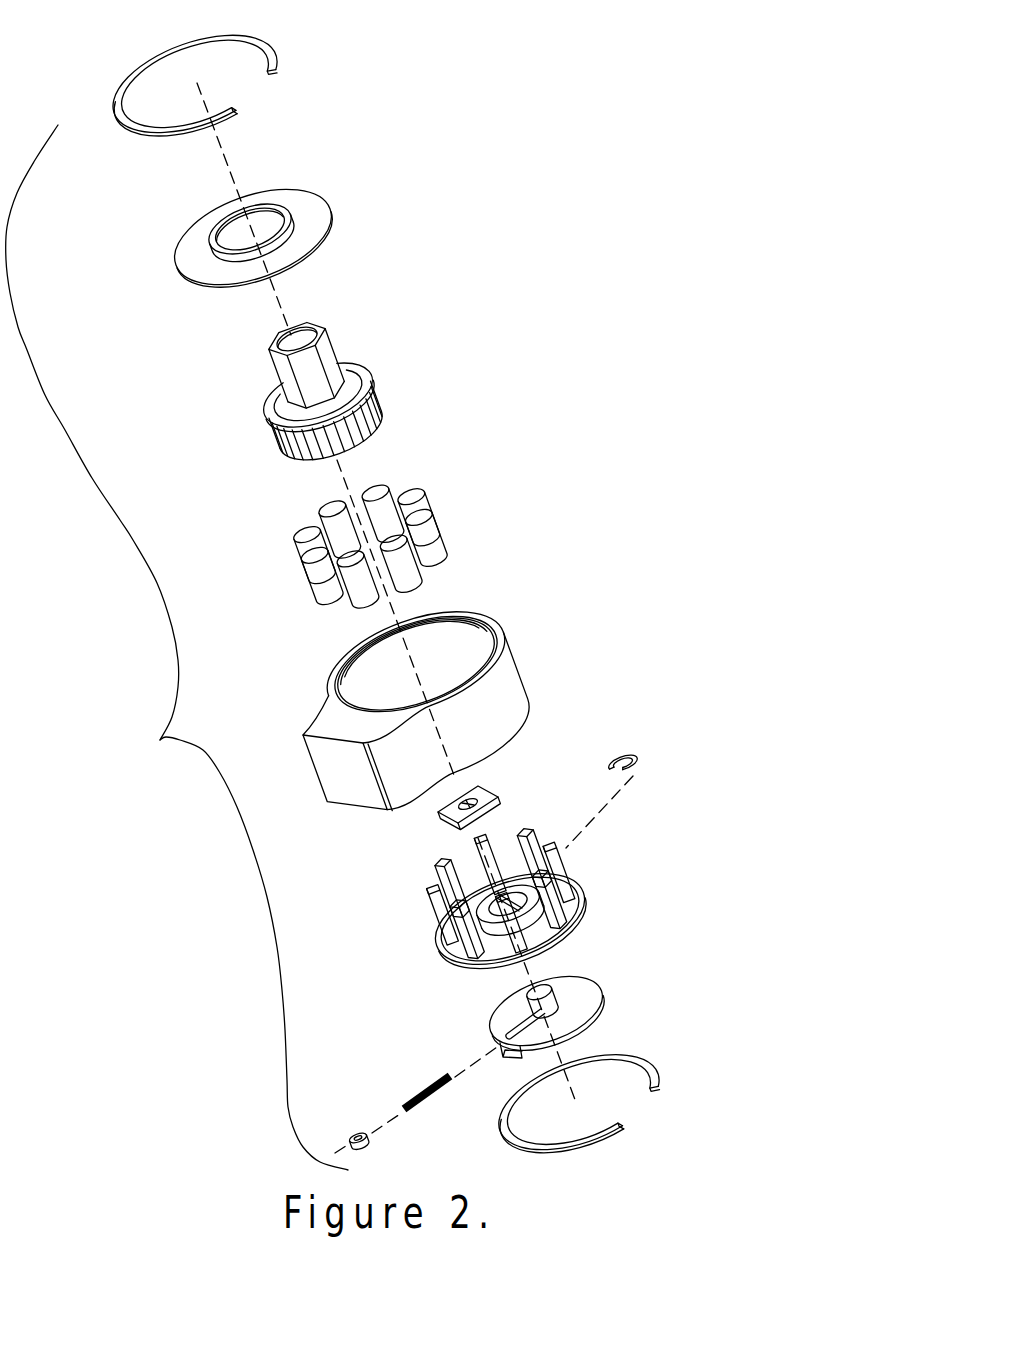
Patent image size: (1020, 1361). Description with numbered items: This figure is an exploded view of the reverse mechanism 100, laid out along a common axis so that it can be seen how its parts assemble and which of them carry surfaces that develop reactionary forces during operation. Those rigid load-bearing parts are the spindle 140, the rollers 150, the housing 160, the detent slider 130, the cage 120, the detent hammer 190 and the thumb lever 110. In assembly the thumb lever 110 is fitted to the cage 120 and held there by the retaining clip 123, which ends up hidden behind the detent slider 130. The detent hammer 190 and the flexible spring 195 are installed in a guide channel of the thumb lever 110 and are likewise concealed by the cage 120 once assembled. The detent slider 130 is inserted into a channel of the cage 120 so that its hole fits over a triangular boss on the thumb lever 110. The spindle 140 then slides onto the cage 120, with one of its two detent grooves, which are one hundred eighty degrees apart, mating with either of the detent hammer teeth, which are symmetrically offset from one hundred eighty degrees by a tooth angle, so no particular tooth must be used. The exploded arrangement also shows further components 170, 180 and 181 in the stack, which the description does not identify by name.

The reverse mechanism 100 is at (177, 647).
The thumb lever 110 is at (613, 977).
The cage 120 is at (597, 893).
The retaining clip 123 is at (646, 756).
The detent slider 130 is at (497, 793).
The spindle 140 is at (368, 372).
The rollers 150 is at (436, 495).
The housing 160 is at (517, 648).
The washer 170 is at (331, 196).
The retaining ring 180 is at (668, 1069).
The retaining ring 181 is at (278, 44).
The detent hammer 190 is at (358, 1134).
The spring 195 is at (446, 1072).